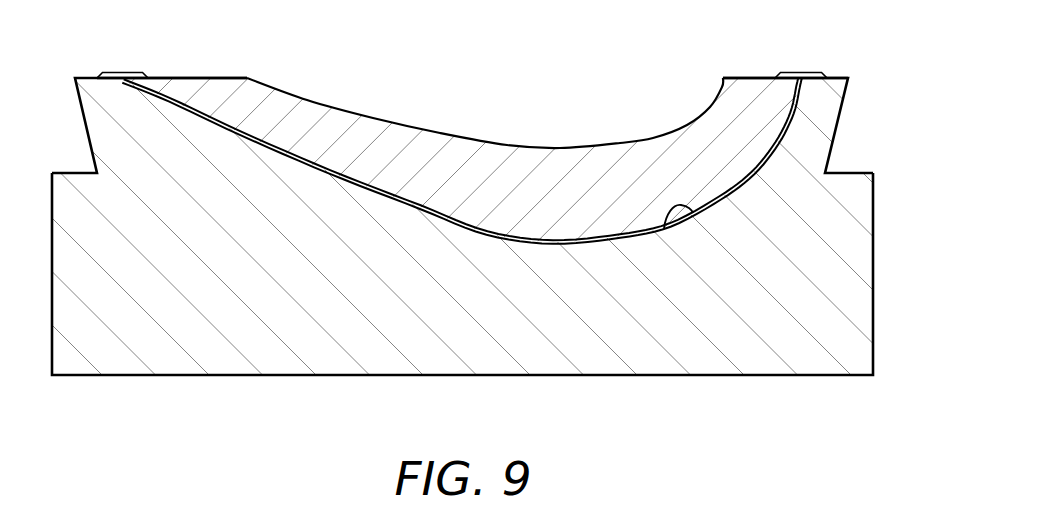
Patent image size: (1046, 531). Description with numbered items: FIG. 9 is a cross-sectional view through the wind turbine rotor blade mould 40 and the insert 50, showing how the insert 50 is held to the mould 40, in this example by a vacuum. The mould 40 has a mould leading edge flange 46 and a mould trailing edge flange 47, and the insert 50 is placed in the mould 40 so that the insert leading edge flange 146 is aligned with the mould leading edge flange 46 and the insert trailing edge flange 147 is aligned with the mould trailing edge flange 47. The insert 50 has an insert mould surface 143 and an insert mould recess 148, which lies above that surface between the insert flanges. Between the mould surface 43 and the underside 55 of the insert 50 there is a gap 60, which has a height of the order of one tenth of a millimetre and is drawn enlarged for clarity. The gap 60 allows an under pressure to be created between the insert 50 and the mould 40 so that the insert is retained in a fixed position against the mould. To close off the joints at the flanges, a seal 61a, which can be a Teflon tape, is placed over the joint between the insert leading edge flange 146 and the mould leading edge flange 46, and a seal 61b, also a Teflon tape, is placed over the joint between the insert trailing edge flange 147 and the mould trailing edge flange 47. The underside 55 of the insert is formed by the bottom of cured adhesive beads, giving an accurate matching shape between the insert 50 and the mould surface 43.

The mould 40 is at (143, 392).
The mould surface 43 is at (483, 233).
The mould leading edge flange 46 is at (848, 77).
The mould trailing edge flange 47 is at (82, 77).
The insert 50 is at (605, 205).
The underside of the insert 55 is at (668, 208).
The gap 60 is at (548, 240).
The seal 61a is at (798, 71).
The seal 61b is at (123, 71).
The insert mould surface 143 is at (425, 128).
The insert leading edge flange 146 is at (737, 77).
The insert trailing edge flange 147 is at (195, 77).
The insert mould recess 148 is at (561, 119).